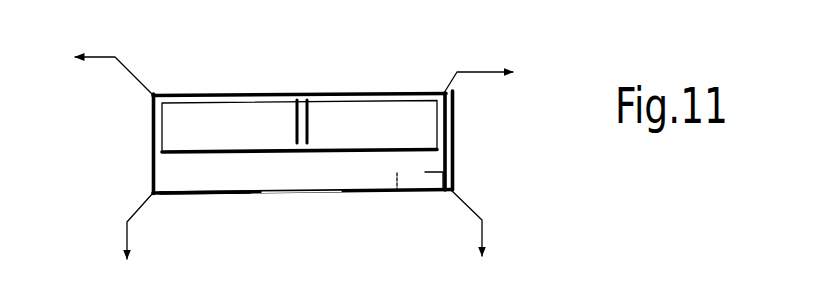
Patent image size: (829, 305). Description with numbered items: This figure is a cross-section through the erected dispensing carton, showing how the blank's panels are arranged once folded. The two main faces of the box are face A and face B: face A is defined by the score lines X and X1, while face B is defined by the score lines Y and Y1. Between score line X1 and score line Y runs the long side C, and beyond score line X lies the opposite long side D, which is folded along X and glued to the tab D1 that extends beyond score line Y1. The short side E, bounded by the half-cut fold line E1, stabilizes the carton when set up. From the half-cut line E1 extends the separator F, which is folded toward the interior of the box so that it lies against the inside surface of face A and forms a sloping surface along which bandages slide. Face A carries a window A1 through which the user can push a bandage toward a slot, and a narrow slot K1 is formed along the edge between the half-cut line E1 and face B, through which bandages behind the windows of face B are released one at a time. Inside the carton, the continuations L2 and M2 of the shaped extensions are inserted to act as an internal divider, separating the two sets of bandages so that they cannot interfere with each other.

The slot K1 is at (388, 94).
The face B is at (355, 94).
The separator F is at (418, 125).
The long side D is at (454, 160).
The half-cut fold line E1 is at (195, 103).
The long side C is at (153, 150).
The continuation M2 is at (281, 81).
The continuation L2 is at (324, 81).
The score line Y is at (102, 72).
The score line Y1 is at (493, 75).
The score line X is at (469, 241).
The score line X1 is at (134, 244).
The face A is at (202, 194).
The window A1 is at (295, 194).
The short side E is at (397, 190).
The tab D1 is at (425, 172).